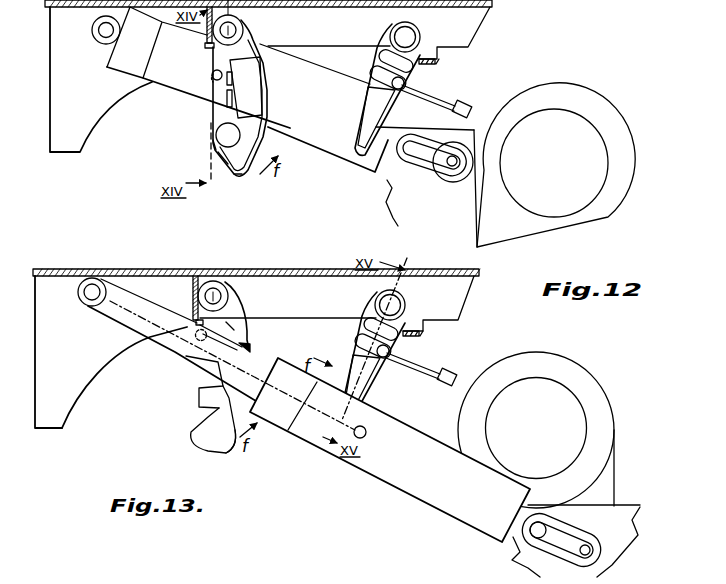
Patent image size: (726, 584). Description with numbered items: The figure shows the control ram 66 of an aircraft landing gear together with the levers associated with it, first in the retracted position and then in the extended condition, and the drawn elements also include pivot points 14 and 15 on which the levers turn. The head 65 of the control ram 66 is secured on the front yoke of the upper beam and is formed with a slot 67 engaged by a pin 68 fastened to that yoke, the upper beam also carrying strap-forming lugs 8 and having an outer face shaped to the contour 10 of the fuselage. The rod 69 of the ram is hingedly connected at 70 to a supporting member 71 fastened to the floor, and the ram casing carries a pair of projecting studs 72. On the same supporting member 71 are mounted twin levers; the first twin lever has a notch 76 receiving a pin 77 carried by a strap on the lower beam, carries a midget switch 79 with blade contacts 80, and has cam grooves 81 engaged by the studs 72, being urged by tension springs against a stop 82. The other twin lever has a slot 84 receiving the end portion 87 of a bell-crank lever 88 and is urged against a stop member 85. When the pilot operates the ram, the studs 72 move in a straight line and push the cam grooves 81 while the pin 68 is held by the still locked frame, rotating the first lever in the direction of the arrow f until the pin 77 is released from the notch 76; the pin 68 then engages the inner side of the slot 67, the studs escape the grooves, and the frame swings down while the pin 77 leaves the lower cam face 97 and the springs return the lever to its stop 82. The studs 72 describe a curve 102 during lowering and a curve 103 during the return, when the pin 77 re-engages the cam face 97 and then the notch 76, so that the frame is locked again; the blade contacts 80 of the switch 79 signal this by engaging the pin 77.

In FIG. 12, the strap-forming lug 8 is at (574, 101).
In FIG. 13, the strap-forming lug 8 is at (570, 371).
In FIG. 12, the contour of the fuselage 10 is at (105, 34).
In FIG. 12, the pivot of hook 14 is at (243, 30).
In FIG. 13, the pivot of hook 14 is at (229, 280).
In FIG. 12, the pivot of lever 15 is at (392, 42).
In FIG. 13, the pivot of lever 15 is at (374, 313).
In FIG. 12, the head of control ram 65 is at (430, 168).
In FIG. 13, the head of control ram 65 is at (583, 557).
In FIG. 12, the control ram 66 is at (313, 105).
In FIG. 13, the control ram 66 is at (423, 489).
In FIG. 12, the slot 67 is at (404, 148).
In FIG. 13, the slot 67 is at (598, 545).
In FIG. 12, the pin 68 is at (450, 171).
In FIG. 13, the pin 68 is at (546, 526).
In FIG. 13, the rod of the ram 69 is at (150, 340).
In FIG. 13, the hinge connection 70 is at (92, 297).
In FIG. 12, the supporting member 71 is at (104, 29).
In FIG. 13, the supporting member 71 is at (55, 290).
In FIG. 12, the projecting stud 72 is at (212, 79).
In FIG. 13, the projecting stud 72 is at (199, 341).
In FIG. 12, the notch 76 is at (220, 172).
In FIG. 13, the notch 76 is at (211, 419).
In FIG. 12, the pin 77 is at (213, 147).
In FIG. 12, the midget switch 79 is at (263, 95).
In FIG. 13, the midget switch 79 is at (225, 317).
In FIG. 12, the blade contacts 80 is at (216, 131).
In FIG. 12, the cam groove 81 is at (211, 72).
In FIG. 13, the cam groove 81 is at (237, 315).
In FIG. 12, the stop 82 is at (205, 25).
In FIG. 13, the stop 82 is at (193, 270).
In FIG. 12, the slot 84 is at (378, 89).
In FIG. 13, the slot 84 is at (366, 357).
In FIG. 12, the stop member 85 is at (431, 44).
In FIG. 13, the stop member 85 is at (413, 328).
In FIG. 12, the end portion of bell-crank lever 87 is at (399, 94).
In FIG. 13, the end portion of bell-crank lever 87 is at (388, 366).
In FIG. 12, the bell-crank lever 88 is at (436, 98).
In FIG. 13, the bell-crank lever 88 is at (424, 364).
In FIG. 12, the lower cam face 97 is at (241, 178).
In FIG. 13, the lower cam face 97 is at (230, 450).
In FIG. 13, the curve 102 is at (325, 426).
In FIG. 13, the curve 103 is at (209, 383).